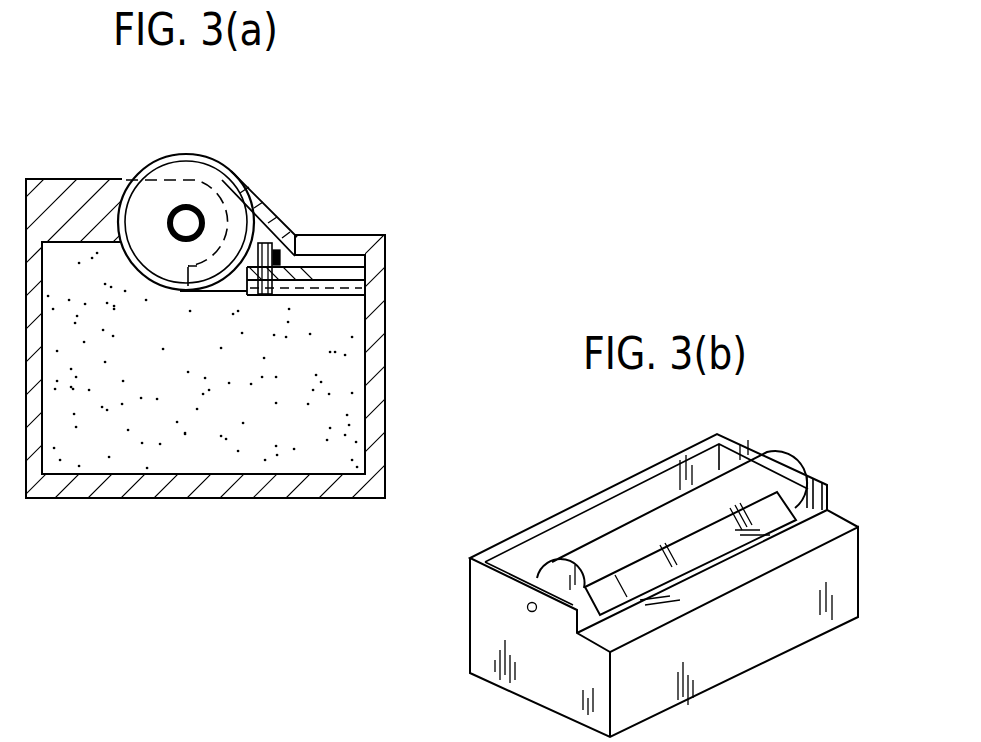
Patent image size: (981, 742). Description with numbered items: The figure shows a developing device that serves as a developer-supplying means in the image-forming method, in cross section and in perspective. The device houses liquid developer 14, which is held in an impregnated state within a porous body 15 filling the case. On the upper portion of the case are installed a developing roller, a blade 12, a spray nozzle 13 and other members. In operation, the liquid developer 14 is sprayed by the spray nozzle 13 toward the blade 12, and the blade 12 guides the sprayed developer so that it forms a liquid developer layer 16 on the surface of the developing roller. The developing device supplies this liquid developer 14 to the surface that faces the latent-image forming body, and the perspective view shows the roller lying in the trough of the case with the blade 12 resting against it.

The blade 12 is at (290, 224).
The spray nozzle 13 is at (272, 238).
The liquid developer 14 is at (340, 292).
The porous body 15 is at (343, 397).
The liquid developer layer 16 is at (154, 162).